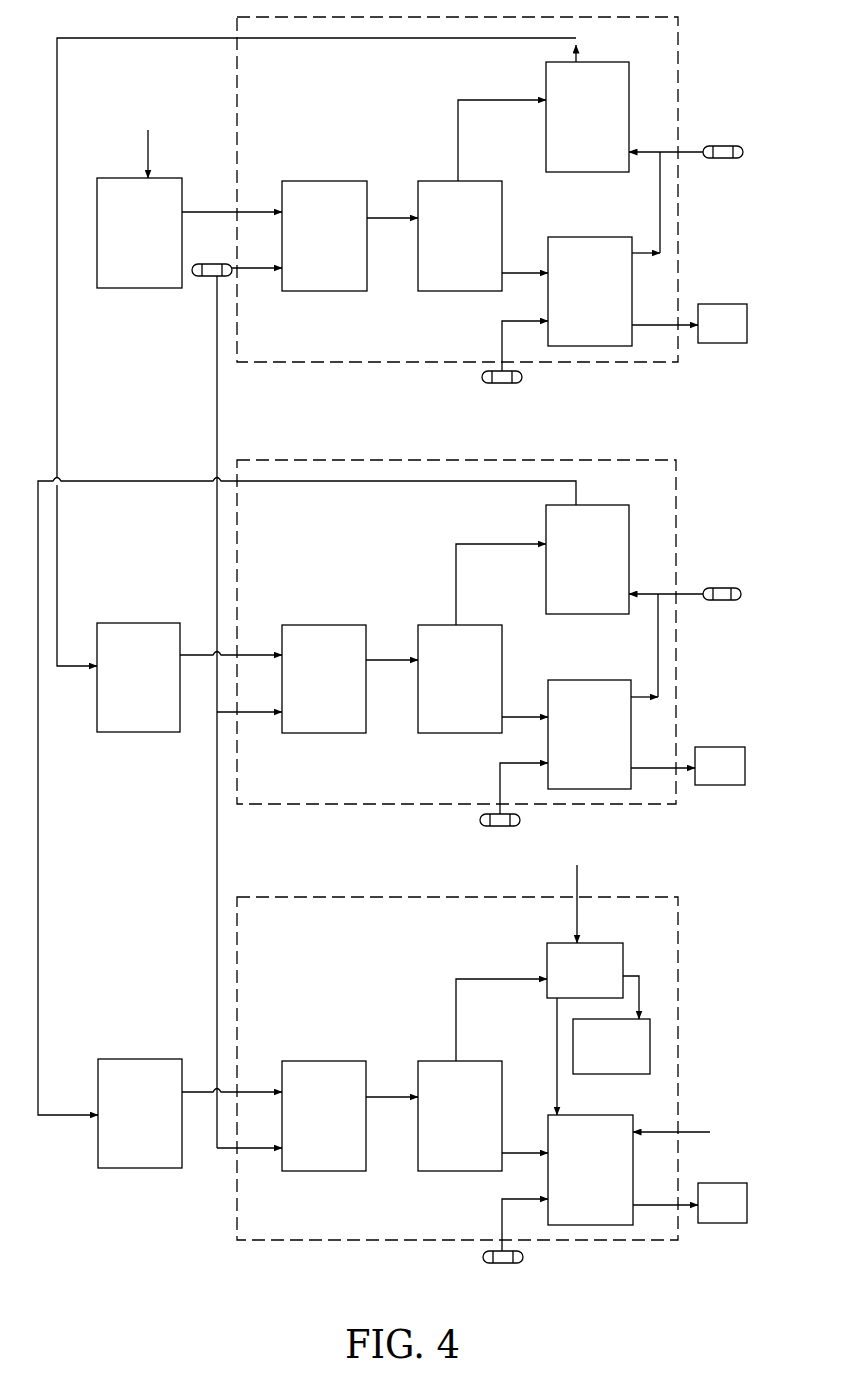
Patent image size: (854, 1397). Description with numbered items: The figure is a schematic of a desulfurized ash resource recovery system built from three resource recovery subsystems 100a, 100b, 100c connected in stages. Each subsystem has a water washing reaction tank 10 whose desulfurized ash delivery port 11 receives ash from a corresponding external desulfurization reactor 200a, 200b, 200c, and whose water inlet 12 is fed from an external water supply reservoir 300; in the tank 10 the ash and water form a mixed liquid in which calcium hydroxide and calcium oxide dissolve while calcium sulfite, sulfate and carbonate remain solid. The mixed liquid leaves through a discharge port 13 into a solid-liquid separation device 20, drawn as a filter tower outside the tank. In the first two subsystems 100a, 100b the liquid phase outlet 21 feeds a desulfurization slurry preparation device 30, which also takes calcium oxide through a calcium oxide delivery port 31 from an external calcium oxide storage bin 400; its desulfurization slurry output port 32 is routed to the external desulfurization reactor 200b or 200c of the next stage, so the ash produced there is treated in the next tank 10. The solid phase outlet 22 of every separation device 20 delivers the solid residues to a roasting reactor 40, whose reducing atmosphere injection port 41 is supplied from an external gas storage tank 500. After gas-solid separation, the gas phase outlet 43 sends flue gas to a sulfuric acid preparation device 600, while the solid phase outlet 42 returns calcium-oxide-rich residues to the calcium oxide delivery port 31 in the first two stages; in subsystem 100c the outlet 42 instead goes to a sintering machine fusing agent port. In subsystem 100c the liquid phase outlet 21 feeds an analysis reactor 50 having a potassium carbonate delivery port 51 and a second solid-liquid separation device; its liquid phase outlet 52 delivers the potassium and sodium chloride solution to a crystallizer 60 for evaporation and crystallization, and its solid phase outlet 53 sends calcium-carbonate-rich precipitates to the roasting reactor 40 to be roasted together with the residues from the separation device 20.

The resource recovery subsystem 100a is at (457, 189).
The resource recovery subsystem 100b is at (456, 632).
The resource recovery subsystem 100c is at (457, 1068).
The external desulfurization reactor 200a is at (126, 192).
The external desulfurization reactor 200b is at (126, 636).
The external desulfurization reactor 200c is at (126, 1070).
The water supply reservoir 300 is at (212, 280).
The calcium oxide storage bin 400 is at (724, 148).
The gas storage tank 500 is at (499, 384).
The sulfuric acid preparation device 600 is at (716, 312).
The water washing reaction tank 10 is at (338, 186).
The desulfurized ash delivery port 11 is at (280, 210).
The water inlet 12 is at (280, 266).
The discharge port 13 is at (370, 218).
The solid-liquid separation device 20 is at (428, 192).
The liquid phase outlet 21 is at (462, 183).
The solid phase outlet 22 is at (505, 270).
The desulfurization slurry preparation device 30 is at (614, 80).
The calcium oxide delivery port 31 is at (632, 148).
The desulfurization slurry output port 32 is at (580, 60).
The roasting reactor 40 is at (597, 248).
The reducing atmosphere injection port 41 is at (546, 318).
The solid phase outlet 42 is at (633, 258).
The gas phase outlet 43 is at (633, 335).
The analysis reactor 50 is at (612, 950).
The potassium carbonate delivery port 51 is at (575, 938).
The liquid phase outlet 52 is at (625, 978).
The solid phase outlet 53 is at (552, 1000).
The crystallizer 60 is at (640, 1055).